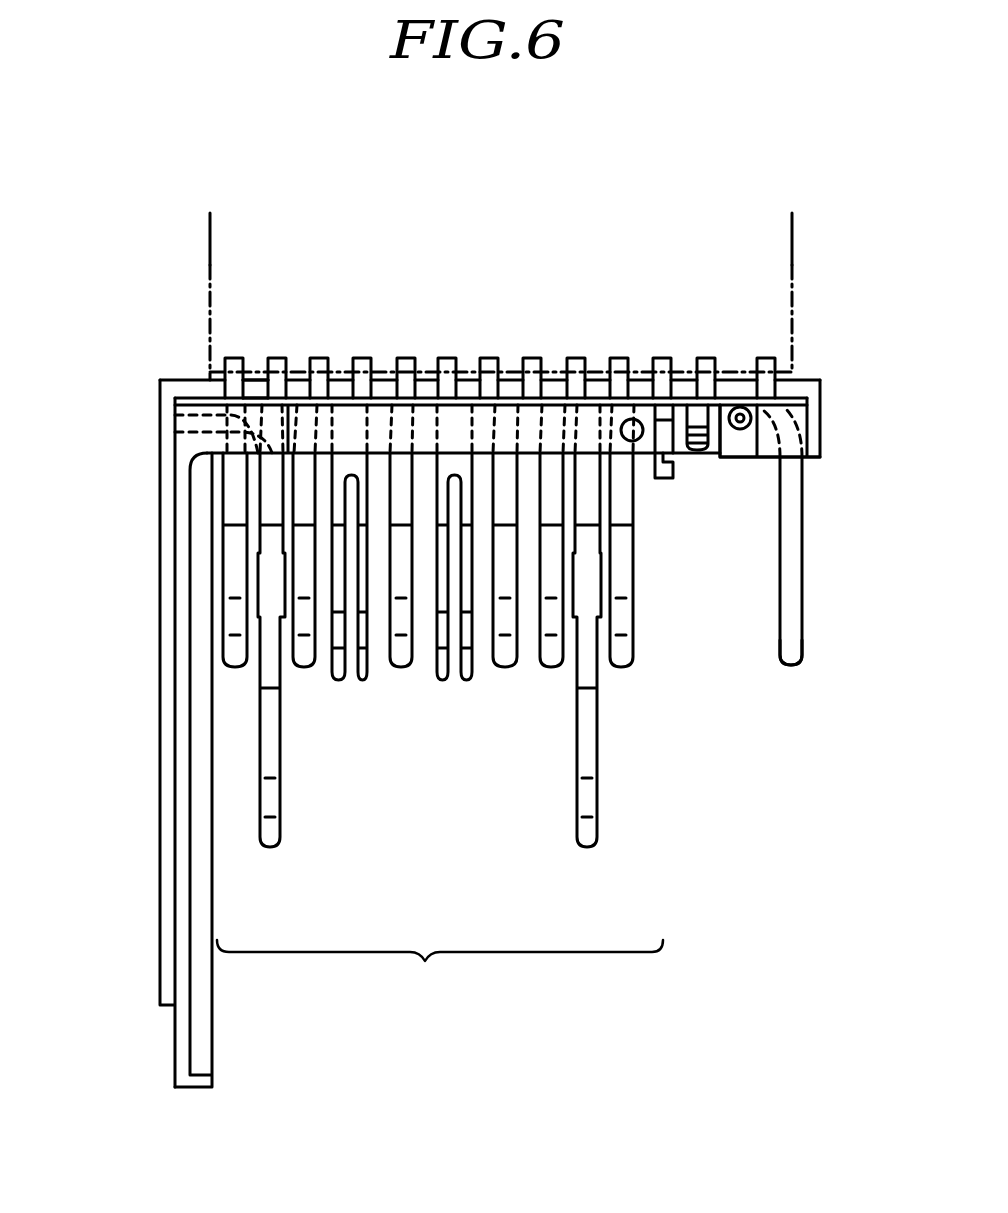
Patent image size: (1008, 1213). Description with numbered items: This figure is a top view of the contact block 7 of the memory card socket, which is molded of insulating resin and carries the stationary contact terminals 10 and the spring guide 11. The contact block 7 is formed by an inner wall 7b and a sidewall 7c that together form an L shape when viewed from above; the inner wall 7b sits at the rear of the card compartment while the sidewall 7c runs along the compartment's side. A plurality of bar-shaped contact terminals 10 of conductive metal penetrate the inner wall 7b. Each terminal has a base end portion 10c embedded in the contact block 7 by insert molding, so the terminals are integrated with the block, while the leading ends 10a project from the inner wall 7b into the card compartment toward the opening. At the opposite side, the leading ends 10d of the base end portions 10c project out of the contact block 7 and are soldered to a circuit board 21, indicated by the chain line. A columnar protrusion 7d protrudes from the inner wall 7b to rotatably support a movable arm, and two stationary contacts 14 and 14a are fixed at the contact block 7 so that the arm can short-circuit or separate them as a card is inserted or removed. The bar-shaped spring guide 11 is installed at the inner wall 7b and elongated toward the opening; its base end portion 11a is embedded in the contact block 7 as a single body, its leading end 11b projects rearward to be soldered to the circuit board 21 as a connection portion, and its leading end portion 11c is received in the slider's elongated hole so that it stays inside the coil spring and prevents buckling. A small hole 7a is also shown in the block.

The contact block 7 is at (802, 381).
The positioning hole of housing 7a is at (738, 397).
The inner wall 7b is at (258, 392).
The sidewall 7c is at (182, 731).
The columnar protrusion 7d is at (624, 396).
The contact terminals 10 is at (440, 705).
The leading ends of the contact terminals 10a is at (280, 835).
The base end portions of the contact terminals 10c is at (507, 450).
The leading ends of the base end portions 10d is at (232, 358).
The spring guide 11 is at (799, 560).
The base end portion of the spring guide 11a is at (820, 410).
The leading end of the base end portion 11b is at (768, 357).
The leading end portion of the spring guide 11c is at (791, 667).
The stationary contact 14 is at (702, 358).
The stationary contact 14a is at (660, 358).
The circuit board 21 is at (209, 227).